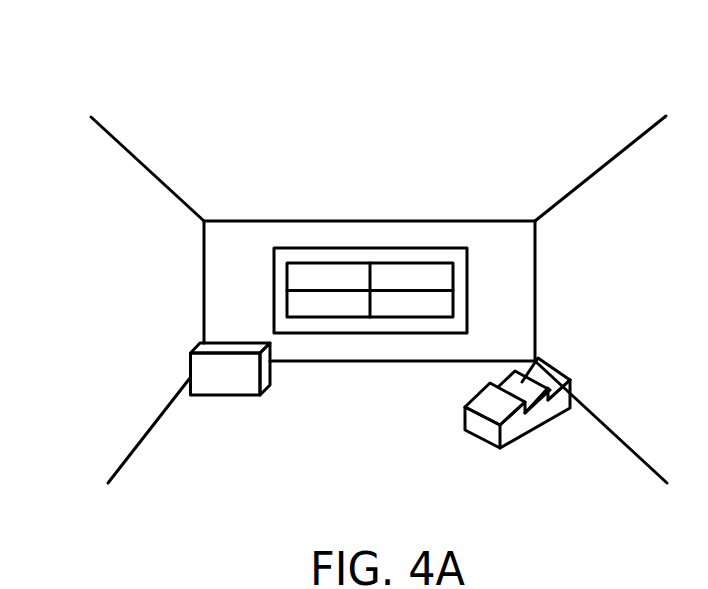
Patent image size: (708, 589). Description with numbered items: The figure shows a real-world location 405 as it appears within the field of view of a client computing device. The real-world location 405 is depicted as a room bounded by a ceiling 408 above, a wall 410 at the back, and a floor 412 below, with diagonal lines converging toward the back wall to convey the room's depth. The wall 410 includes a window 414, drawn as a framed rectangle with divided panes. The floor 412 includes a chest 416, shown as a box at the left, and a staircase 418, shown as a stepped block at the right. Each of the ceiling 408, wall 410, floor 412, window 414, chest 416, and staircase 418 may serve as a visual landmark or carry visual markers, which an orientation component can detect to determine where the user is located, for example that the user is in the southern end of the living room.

The real-world location 405 is at (126, 55).
The ceiling 408 is at (372, 172).
The wall 410 is at (512, 250).
The floor 412 is at (373, 458).
The window 414 is at (273, 308).
The chest 416 is at (163, 371).
The staircase 418 is at (587, 395).